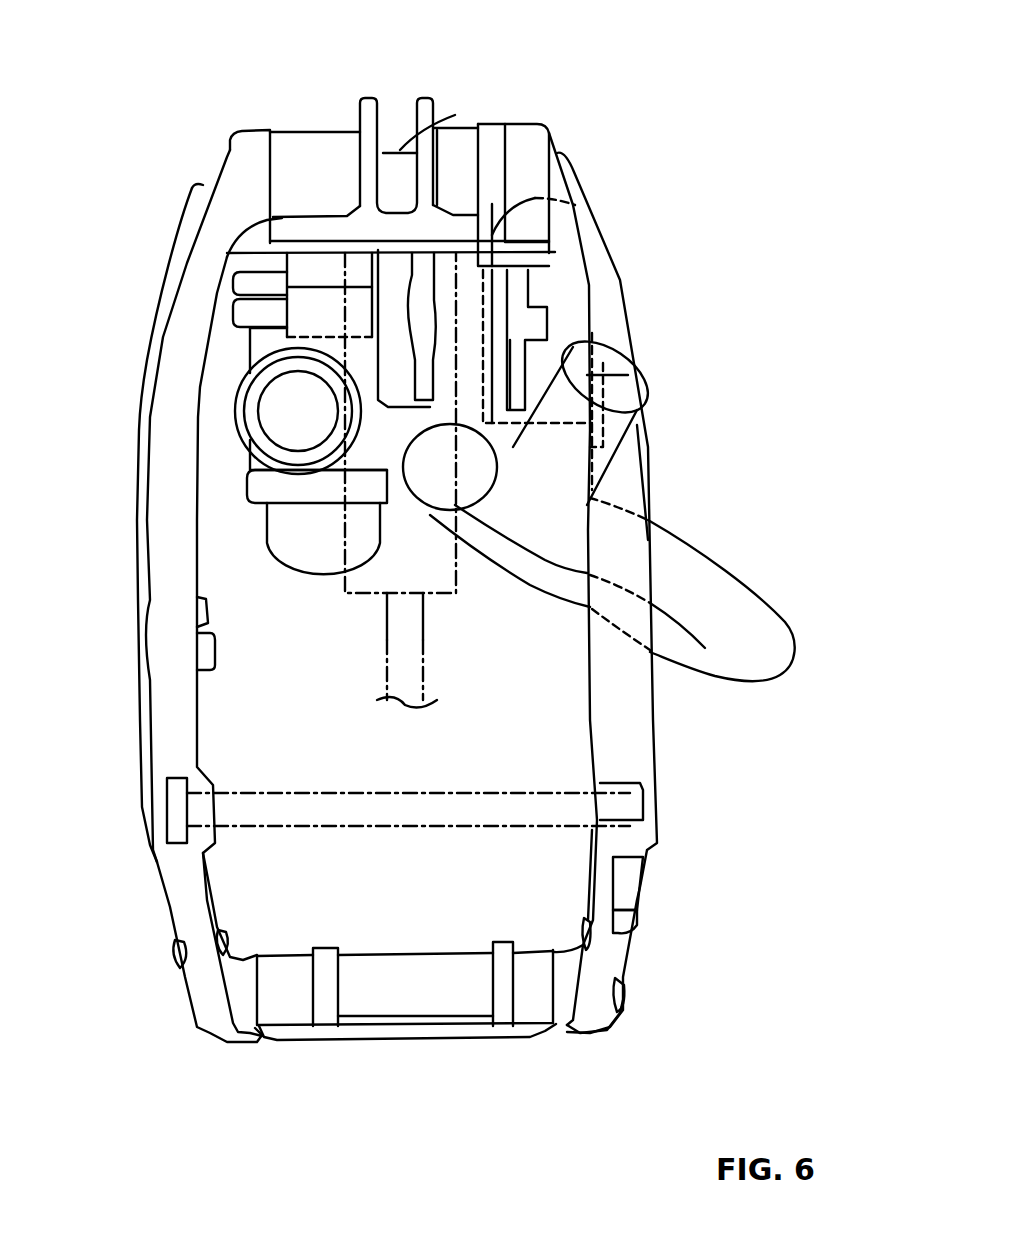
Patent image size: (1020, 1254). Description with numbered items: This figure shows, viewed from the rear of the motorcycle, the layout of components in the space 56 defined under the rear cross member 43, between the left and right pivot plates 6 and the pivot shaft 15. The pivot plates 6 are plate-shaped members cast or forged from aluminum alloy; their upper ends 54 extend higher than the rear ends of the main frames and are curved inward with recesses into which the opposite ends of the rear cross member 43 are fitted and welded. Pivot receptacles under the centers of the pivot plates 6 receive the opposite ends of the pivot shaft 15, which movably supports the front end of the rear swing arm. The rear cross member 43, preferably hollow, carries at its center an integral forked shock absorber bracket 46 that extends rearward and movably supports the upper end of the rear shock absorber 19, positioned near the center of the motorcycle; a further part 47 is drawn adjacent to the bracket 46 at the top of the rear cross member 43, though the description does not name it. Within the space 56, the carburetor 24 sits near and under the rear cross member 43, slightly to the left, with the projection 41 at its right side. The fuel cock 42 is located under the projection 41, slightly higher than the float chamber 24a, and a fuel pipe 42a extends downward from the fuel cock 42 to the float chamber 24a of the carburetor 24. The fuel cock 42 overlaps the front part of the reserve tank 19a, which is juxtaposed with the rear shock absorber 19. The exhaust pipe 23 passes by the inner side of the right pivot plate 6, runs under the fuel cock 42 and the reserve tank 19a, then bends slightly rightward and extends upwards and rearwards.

The pivot plate 6 is at (163, 338).
The pivot shaft 15 is at (343, 803).
The rear shock absorber 19 is at (345, 598).
The reserve tank 19a is at (580, 217).
The exhaust pipe 23 is at (737, 587).
The carburetor 24 is at (250, 366).
The float chamber 24a is at (293, 535).
The projection 41 is at (550, 253).
The fuel cock 42 is at (613, 370).
The fuel pipe 42a is at (510, 390).
The rear cross member 43 is at (312, 163).
The shock absorber bracket 46 is at (415, 107).
The breather passage 47 is at (455, 115).
The upper end 54 is at (230, 170).
The space 56 is at (518, 651).